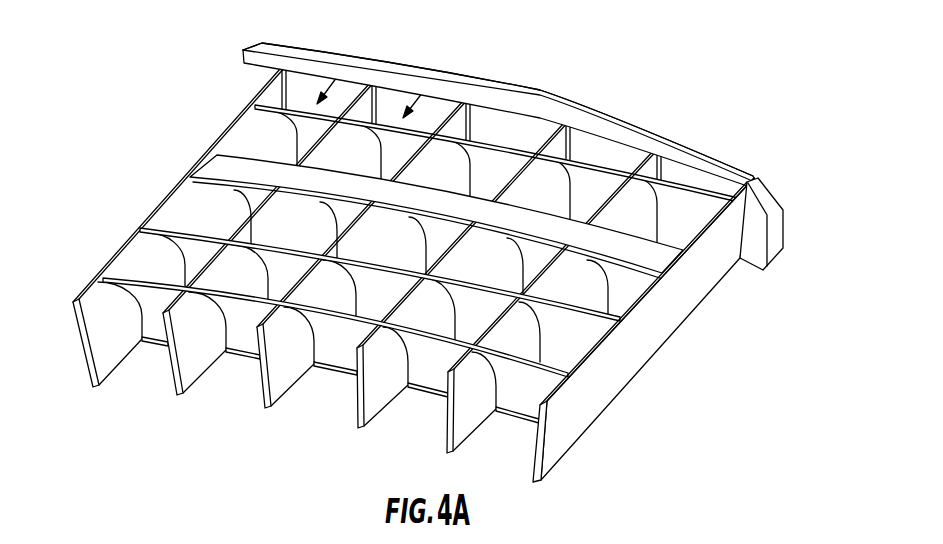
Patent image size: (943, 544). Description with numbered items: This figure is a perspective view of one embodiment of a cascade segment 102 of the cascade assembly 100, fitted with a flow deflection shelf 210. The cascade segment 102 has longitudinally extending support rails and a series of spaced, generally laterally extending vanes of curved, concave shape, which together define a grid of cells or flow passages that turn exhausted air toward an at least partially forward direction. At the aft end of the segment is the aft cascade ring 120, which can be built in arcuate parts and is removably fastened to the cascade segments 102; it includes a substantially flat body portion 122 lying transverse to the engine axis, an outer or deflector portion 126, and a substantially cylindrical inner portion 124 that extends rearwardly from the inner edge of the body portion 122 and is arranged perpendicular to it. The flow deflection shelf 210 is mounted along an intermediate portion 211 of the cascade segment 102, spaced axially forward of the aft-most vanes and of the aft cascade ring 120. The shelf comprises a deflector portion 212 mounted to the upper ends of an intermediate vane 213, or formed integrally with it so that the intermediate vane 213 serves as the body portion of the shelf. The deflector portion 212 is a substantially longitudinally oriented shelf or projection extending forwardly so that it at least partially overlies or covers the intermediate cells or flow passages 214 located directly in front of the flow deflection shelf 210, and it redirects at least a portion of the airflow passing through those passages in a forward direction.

The cascade assembly 100 is at (433, 241).
The cascade segment 102 is at (394, 235).
The aft cascade ring 120 is at (500, 94).
The body portion 122 is at (782, 236).
The inner portion 124 is at (755, 243).
The deflector portion 126 is at (317, 60).
The flow deflection shelf 210 is at (655, 330).
The intermediate portion 211 is at (150, 212).
The deflector portion 212 is at (217, 165).
The intermediate vane 213 is at (631, 283).
The intermediate cells or flow passages 214 is at (607, 307).